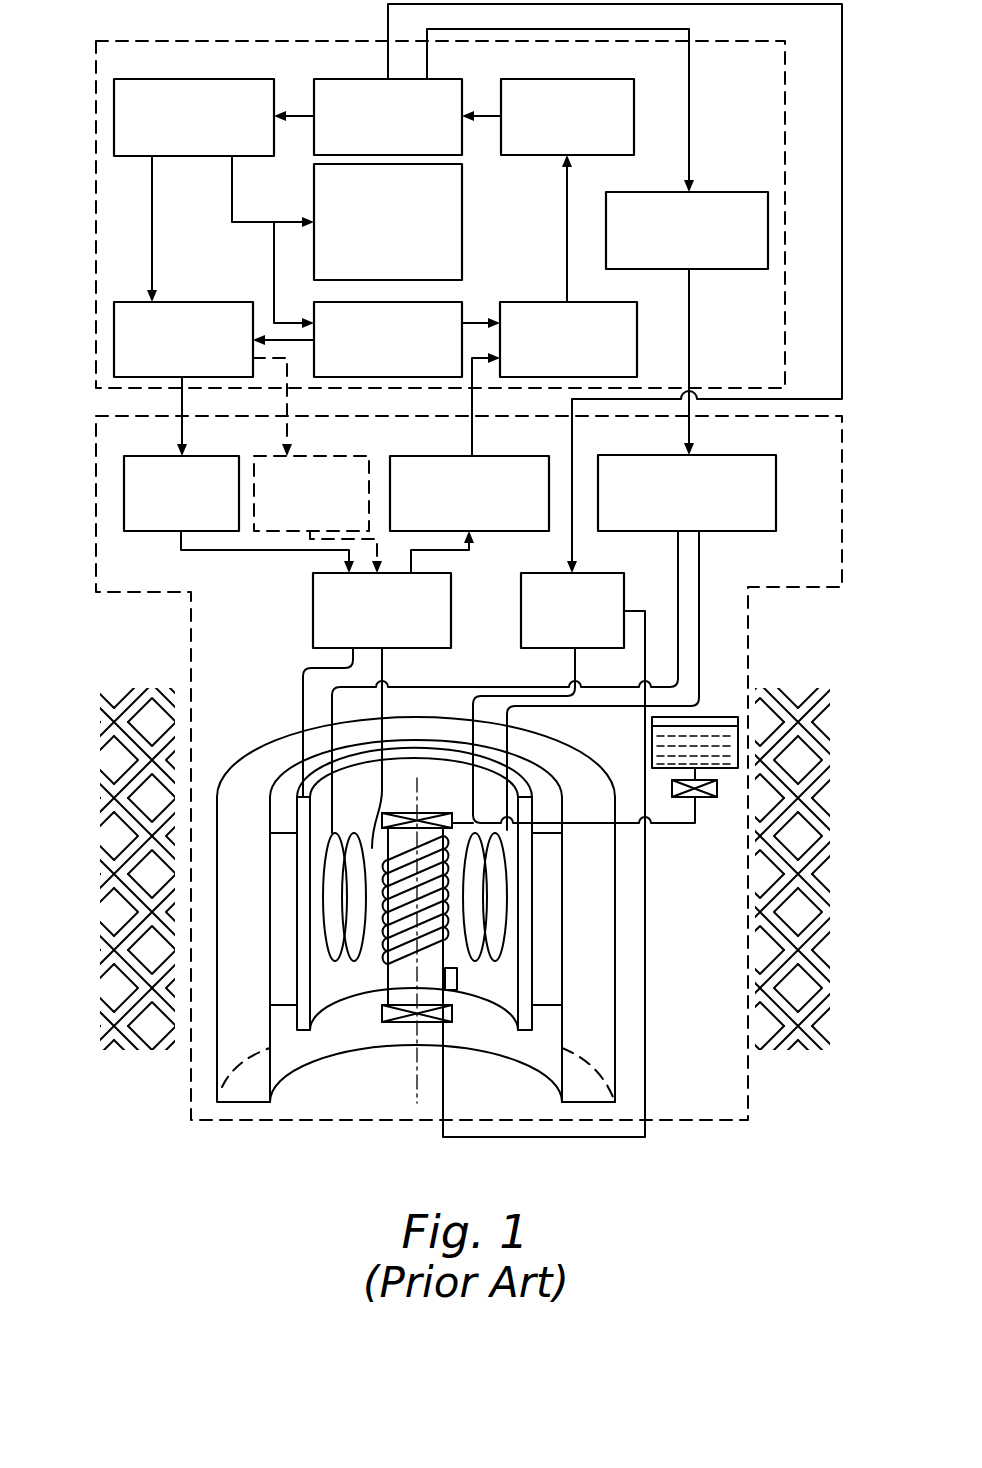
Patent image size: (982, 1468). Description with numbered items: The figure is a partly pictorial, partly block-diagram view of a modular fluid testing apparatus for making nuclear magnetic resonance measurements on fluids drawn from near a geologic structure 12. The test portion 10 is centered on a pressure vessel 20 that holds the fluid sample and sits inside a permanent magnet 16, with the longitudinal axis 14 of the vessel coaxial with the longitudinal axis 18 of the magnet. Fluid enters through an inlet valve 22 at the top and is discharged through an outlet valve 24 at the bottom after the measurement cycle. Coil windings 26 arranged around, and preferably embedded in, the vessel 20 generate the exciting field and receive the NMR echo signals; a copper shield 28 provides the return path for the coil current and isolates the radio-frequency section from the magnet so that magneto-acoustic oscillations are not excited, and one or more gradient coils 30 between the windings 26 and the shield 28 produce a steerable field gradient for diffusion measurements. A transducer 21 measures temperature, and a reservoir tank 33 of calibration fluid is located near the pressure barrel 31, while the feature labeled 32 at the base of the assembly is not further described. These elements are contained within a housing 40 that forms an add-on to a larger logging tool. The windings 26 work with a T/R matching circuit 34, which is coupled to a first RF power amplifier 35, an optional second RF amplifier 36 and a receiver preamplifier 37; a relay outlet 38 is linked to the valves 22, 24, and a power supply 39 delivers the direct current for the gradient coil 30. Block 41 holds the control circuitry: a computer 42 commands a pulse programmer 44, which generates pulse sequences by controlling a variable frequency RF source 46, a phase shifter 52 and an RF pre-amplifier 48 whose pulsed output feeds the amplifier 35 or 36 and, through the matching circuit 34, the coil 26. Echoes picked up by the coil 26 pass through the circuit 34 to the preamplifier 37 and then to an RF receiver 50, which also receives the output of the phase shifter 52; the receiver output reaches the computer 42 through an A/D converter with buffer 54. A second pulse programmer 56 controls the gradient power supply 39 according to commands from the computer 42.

The test portion 10 is at (791, 1118).
The earth formation 12 is at (798, 690).
The longitudinal axis 14 is at (416, 1050).
The permanent magnet 16 is at (545, 948).
The longitudinal axis 18 is at (412, 1084).
The pressure vessel 20 is at (438, 955).
The transducer 21 is at (457, 988).
The inlet valve 22 is at (432, 813).
The outlet valve 24 is at (382, 1013).
The coil windings 26 is at (385, 955).
The copper shield 28 is at (535, 882).
The magnetic field gradient coil 30 is at (497, 905).
The pressure barrel 31 is at (597, 1020).
The probe bottom 32 is at (582, 1070).
The reservoir tank 33 is at (700, 717).
The T/R matching circuit 34 is at (313, 612).
The first RF power amplifier 35 is at (156, 456).
The second RF amplifier 36 is at (268, 456).
The receiver preamplifier 37 is at (416, 456).
The relay outlet 38 is at (530, 573).
The power supply 39 is at (636, 455).
The housing 40 is at (752, 602).
The block 41 is at (785, 217).
The computer 42 is at (350, 79).
The pulse programmer 44 is at (155, 79).
The variable frequency RF source 46 is at (314, 201).
The RF pre-amplifier 48 is at (206, 302).
The RF receiver 50 is at (637, 340).
The phase shifter 52 is at (462, 302).
The A/D converter with buffer 54 is at (540, 79).
The pulse programmer 56 is at (724, 192).